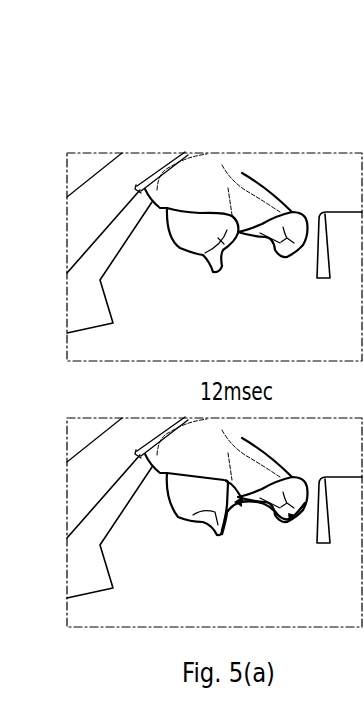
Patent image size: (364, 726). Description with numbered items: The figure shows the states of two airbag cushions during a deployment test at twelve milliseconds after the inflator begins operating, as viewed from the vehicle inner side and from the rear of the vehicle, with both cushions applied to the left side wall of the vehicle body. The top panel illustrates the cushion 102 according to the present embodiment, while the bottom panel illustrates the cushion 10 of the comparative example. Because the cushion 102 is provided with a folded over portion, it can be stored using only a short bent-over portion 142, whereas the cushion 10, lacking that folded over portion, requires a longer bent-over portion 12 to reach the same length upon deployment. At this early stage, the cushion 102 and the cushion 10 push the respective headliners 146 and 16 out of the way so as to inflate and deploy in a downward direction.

The cushion 102 is at (105, 123).
The headliner 146 is at (162, 165).
The bent-over portion 142 is at (165, 210).
The cushion 10 is at (136, 413).
The headliner 16 is at (161, 428).
The bent-over portion 12 is at (165, 475).